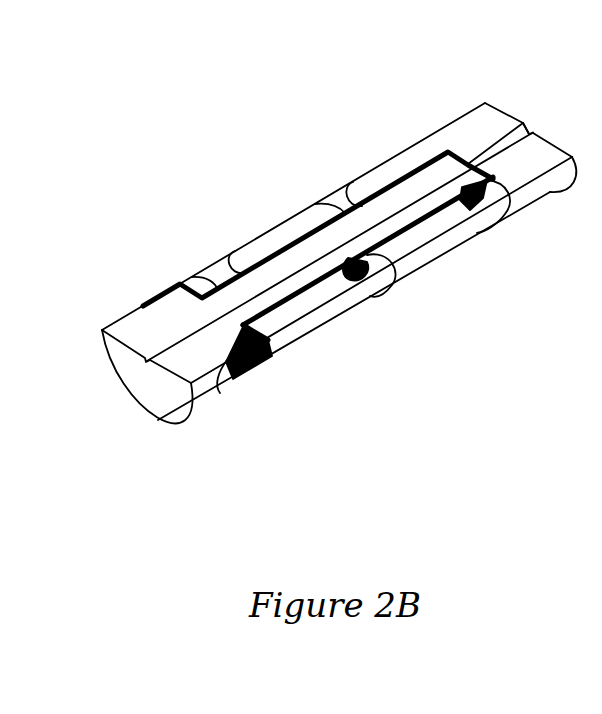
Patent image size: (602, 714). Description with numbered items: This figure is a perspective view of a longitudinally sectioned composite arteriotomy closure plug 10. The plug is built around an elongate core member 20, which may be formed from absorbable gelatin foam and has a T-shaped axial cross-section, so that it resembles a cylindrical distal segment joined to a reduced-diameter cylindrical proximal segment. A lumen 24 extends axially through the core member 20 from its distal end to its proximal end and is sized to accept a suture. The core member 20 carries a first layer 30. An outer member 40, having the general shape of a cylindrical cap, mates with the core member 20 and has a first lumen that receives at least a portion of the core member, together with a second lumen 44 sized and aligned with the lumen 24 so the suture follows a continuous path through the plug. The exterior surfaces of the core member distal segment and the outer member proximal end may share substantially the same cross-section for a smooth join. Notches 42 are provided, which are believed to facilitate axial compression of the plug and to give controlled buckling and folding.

The composite arteriotomy closure plug 10 is at (325, 250).
The elongate core member 20 is at (302, 247).
The lumen 24 is at (147, 361).
The first layer 30 is at (250, 373).
The outer member 40 is at (473, 133).
The notches 42 is at (219, 280).
The second lumen 44 is at (528, 133).